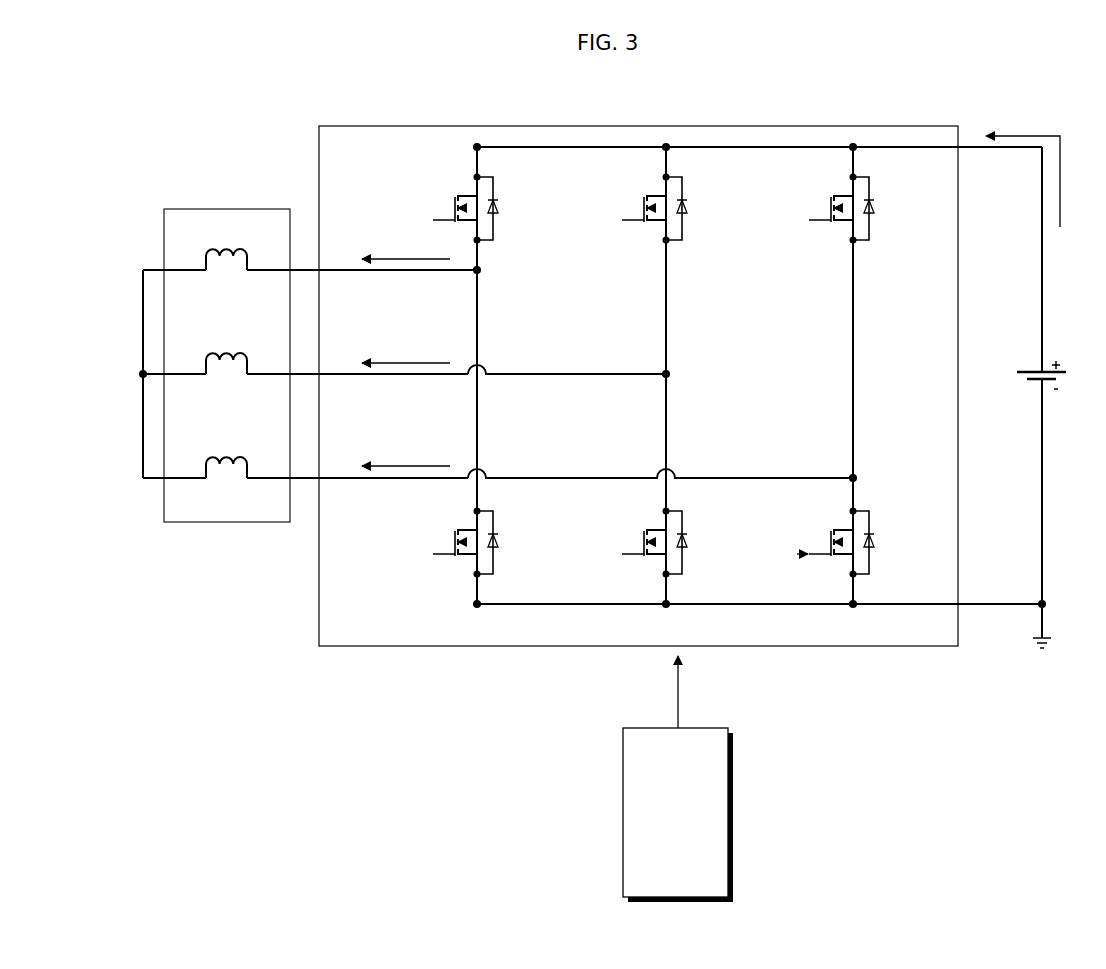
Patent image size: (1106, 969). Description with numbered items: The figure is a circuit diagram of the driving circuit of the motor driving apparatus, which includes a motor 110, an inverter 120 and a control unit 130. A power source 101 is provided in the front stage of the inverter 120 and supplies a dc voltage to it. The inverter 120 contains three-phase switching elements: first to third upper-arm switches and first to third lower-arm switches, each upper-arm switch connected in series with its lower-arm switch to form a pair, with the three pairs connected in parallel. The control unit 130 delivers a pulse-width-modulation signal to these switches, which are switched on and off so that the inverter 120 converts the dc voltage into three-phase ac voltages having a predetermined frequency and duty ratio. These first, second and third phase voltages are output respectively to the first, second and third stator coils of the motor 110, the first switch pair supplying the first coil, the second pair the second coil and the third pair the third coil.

The motor 110 is at (226, 209).
The inverter 120 is at (735, 126).
The power source 101 is at (1056, 356).
The control unit 130 is at (722, 728).